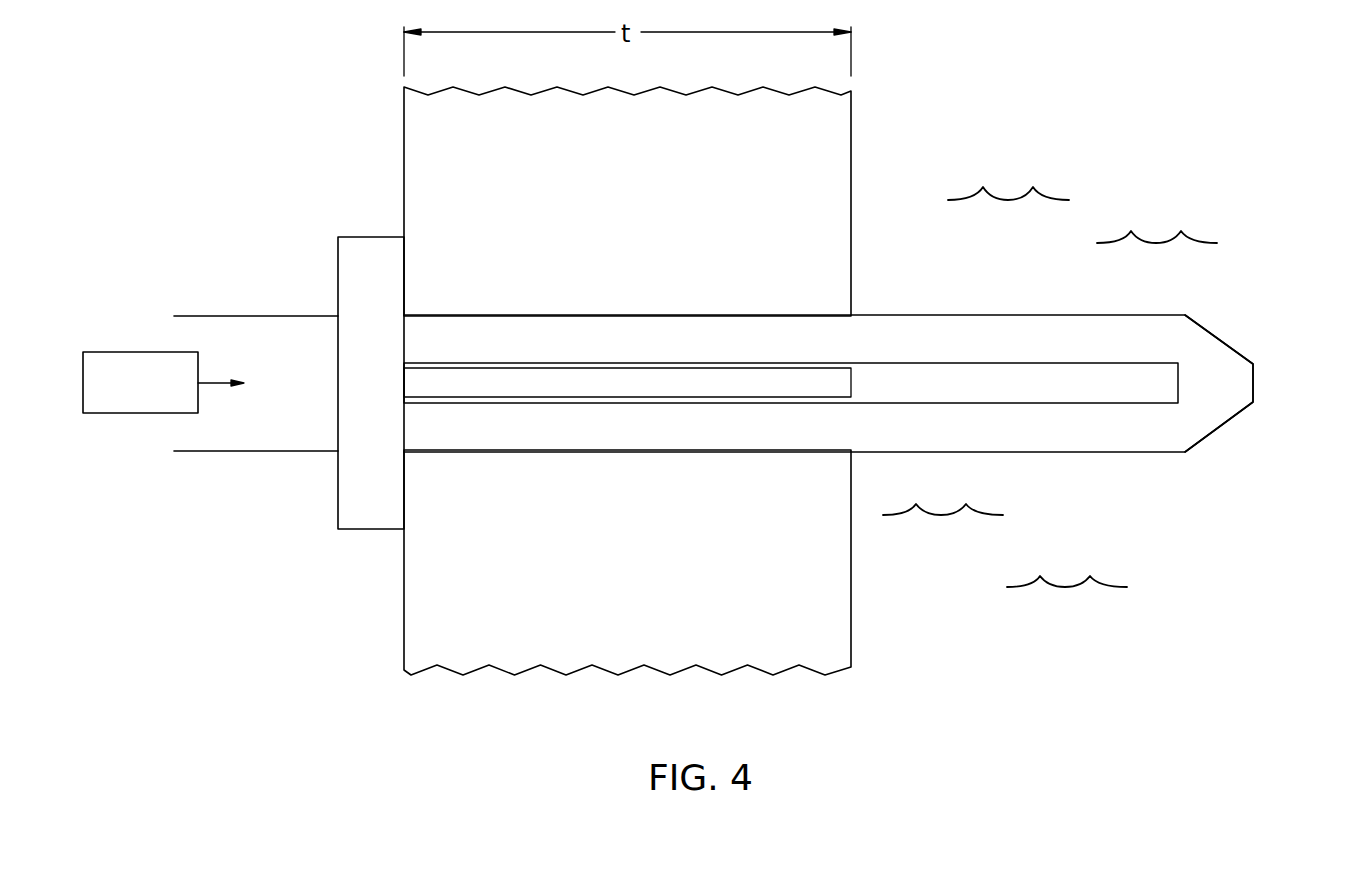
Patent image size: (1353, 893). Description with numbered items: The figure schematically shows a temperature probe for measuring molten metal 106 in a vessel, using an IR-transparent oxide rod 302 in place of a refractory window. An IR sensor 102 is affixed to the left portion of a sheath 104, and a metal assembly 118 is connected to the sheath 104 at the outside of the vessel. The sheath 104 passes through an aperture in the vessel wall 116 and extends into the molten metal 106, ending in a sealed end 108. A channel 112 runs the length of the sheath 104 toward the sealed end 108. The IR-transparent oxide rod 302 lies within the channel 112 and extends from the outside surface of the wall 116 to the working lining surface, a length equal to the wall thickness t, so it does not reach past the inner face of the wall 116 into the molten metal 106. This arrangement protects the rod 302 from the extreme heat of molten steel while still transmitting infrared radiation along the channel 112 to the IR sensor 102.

The IR sensor 102 is at (120, 397).
The sheath 104 is at (892, 315).
The molten metal 106 is at (1086, 590).
The sealed end 108 is at (1253, 383).
The channel 112 is at (1001, 363).
The wall 116 is at (720, 652).
The metal assembly 118 is at (233, 315).
The IR-transparent oxide rod 302 is at (752, 398).